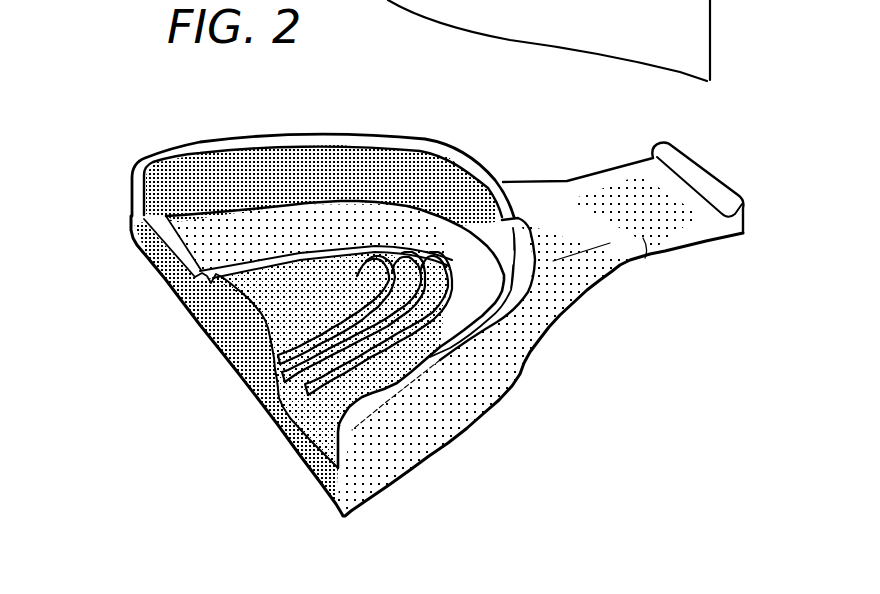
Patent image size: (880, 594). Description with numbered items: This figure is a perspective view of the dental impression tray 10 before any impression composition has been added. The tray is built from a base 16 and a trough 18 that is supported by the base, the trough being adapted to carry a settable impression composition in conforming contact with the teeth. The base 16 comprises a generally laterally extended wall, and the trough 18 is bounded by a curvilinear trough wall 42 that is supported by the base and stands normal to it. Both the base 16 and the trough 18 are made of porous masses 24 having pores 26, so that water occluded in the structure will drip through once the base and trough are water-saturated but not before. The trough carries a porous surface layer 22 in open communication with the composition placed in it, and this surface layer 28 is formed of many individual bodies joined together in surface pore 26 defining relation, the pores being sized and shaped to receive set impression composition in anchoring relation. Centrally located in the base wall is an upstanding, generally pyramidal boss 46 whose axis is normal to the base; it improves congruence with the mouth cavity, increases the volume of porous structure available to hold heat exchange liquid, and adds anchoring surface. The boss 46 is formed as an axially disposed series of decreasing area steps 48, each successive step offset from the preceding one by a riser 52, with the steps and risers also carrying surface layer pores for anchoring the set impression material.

The dental impression tray 10 is at (585, 323).
The base 16 is at (168, 283).
The trough 18 is at (398, 213).
The porous surface layer 22 is at (296, 162).
The porous masses 24 is at (131, 172).
The pores 26 is at (187, 167).
The surface layer 28 is at (287, 241).
The trough wall 42 is at (425, 408).
The boss 46 is at (320, 294).
The steps 48 is at (423, 270).
The riser 52 is at (420, 312).